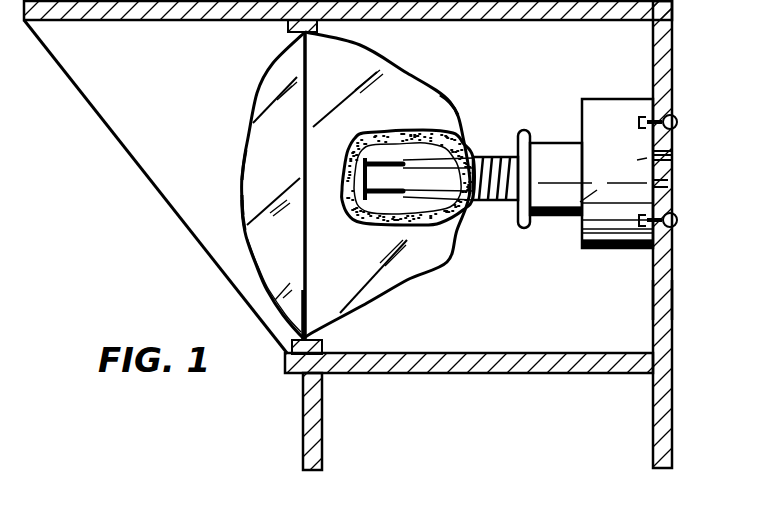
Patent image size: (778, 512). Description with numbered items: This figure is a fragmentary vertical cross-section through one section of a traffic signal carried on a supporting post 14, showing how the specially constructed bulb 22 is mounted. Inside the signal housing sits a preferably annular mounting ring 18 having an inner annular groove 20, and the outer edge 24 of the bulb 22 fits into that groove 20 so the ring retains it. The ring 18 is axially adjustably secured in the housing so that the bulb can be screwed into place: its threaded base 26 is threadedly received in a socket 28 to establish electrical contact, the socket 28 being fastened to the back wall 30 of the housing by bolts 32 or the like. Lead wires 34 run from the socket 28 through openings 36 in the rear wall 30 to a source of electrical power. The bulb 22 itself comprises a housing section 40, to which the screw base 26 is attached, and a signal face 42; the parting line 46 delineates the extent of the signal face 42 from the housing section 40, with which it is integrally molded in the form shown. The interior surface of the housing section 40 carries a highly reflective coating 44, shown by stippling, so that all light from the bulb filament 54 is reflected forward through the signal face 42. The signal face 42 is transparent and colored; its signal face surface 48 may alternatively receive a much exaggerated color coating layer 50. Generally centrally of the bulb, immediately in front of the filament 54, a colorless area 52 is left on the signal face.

The supporting post 14 is at (660, 405).
The mounting ring 18 is at (318, 28).
The inner annular groove 20 is at (322, 347).
The bulb 22 is at (449, 104).
The outer edge of the bulb 24 is at (303, 300).
The threaded base 26 is at (497, 200).
The socket 28 is at (570, 217).
The back wall 30 is at (660, 297).
The bolts 32 is at (673, 120).
The lead wires 34 is at (673, 157).
The openings 36 is at (672, 150).
The housing section 40 is at (407, 75).
The signal face 42 is at (262, 88).
The reflective coating 44 is at (450, 130).
The parting line 46 is at (307, 102).
The signal face surface 48 is at (243, 210).
The coating layer 50 is at (242, 205).
The colorless area 52 is at (243, 173).
The bulb filament 54 is at (392, 190).